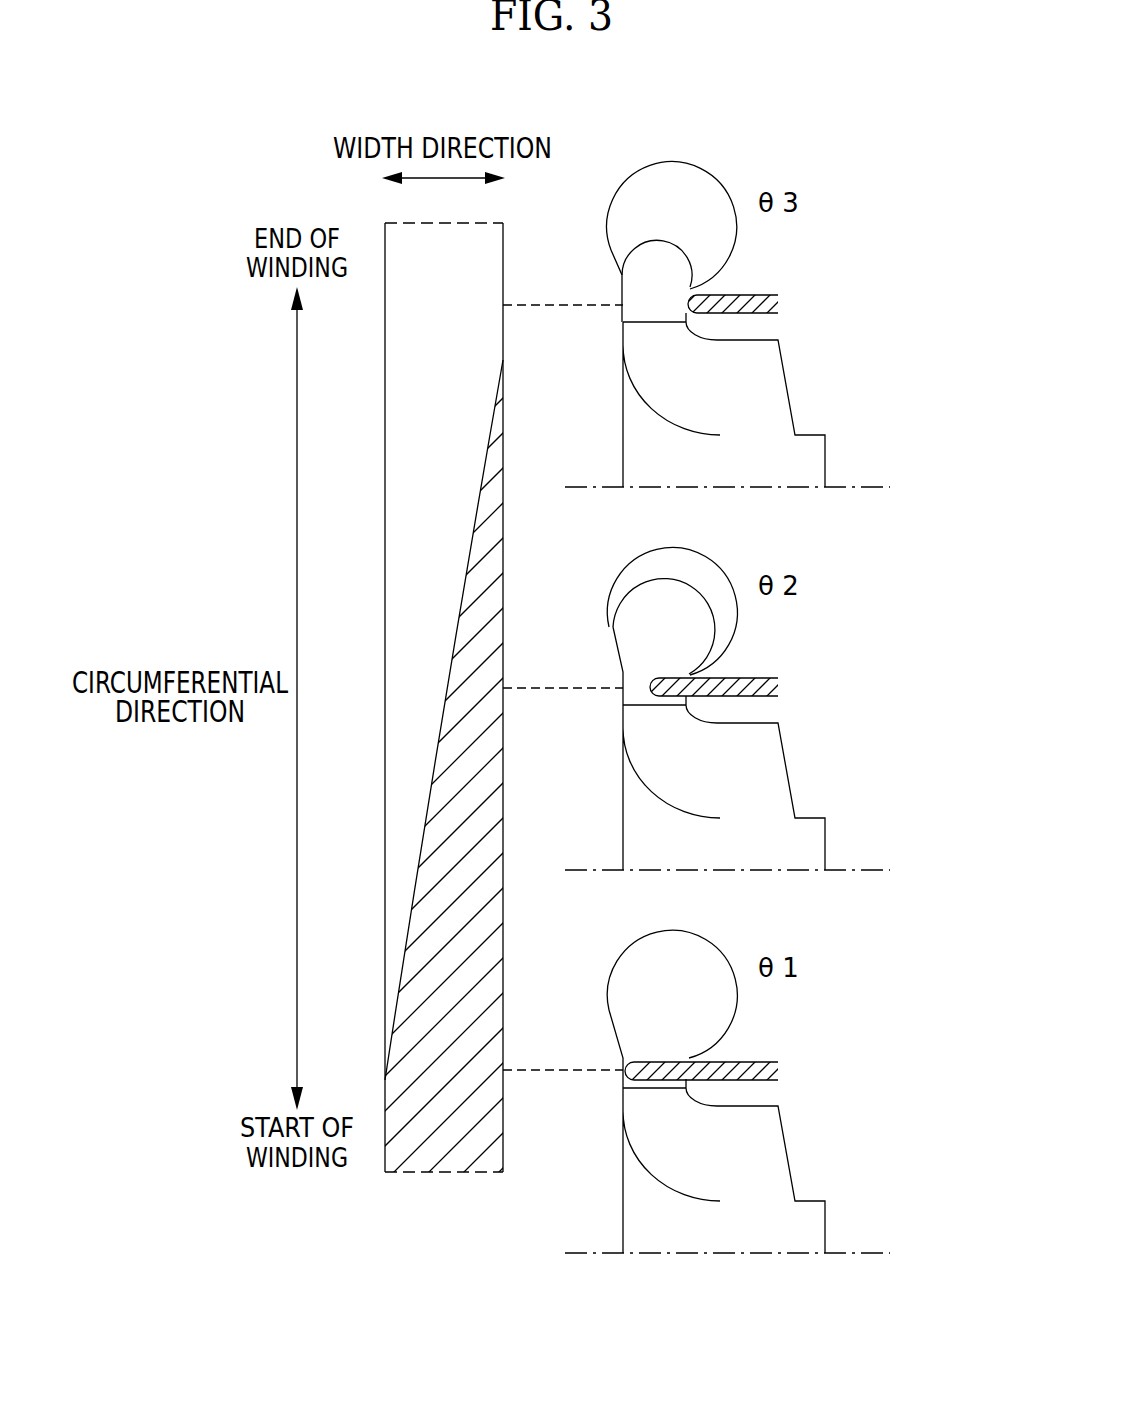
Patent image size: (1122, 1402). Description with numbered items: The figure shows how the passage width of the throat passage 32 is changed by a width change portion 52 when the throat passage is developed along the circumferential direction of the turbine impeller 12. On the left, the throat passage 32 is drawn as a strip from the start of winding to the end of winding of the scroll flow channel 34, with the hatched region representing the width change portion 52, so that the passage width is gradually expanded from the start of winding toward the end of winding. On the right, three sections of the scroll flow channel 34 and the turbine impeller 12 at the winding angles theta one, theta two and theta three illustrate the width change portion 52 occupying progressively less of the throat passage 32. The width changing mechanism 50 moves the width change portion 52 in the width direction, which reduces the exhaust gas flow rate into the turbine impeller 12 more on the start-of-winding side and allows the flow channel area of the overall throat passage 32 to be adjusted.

The turbine impeller 12 is at (845, 462).
The throat passage 32 is at (460, 407).
The scroll flow channel 34 is at (643, 268).
The width changing mechanism 50 is at (822, 246).
The width change portion 52 is at (778, 300).